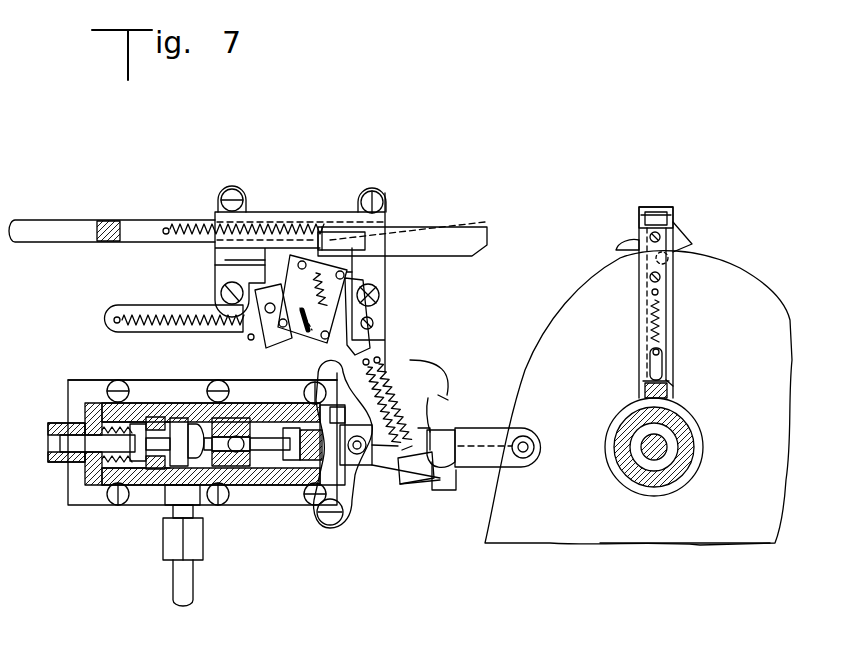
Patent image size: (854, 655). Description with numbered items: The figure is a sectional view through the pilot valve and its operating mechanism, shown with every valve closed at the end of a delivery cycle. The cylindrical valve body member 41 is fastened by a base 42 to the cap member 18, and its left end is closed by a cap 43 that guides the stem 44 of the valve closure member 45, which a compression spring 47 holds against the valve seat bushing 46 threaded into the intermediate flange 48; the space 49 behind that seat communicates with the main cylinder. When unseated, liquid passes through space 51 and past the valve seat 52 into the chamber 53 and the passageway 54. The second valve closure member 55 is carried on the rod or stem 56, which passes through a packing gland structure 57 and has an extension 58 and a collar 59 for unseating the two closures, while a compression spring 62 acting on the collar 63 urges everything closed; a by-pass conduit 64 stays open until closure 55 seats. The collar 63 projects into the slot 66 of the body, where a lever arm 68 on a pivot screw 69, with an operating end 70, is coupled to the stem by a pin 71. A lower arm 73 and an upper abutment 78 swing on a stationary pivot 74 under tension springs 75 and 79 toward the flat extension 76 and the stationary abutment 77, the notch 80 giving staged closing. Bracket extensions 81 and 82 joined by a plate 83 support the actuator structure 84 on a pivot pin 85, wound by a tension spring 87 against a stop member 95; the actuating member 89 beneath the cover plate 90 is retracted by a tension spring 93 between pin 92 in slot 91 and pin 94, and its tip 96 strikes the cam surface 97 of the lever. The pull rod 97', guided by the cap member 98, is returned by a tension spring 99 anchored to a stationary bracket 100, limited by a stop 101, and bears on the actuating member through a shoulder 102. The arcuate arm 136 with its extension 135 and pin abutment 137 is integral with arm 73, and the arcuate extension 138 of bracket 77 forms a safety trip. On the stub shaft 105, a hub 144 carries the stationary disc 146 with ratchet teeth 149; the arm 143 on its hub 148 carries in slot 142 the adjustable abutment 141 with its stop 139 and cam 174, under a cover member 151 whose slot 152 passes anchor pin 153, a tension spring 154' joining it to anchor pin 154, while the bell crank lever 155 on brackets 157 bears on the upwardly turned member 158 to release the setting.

The cap member 18 is at (71, 505).
The valve body member 41 is at (254, 478).
The base 42 is at (112, 486).
The cap 43 is at (88, 380).
The stem 44 is at (76, 437).
The valve closure member 45 is at (126, 470).
The valve seat bushing 46 is at (146, 470).
The compression spring 47 is at (100, 464).
The intermediate flange 48 is at (150, 424).
The space 49 is at (138, 403).
The space 51 is at (187, 417).
The valve seat 52 is at (212, 418).
The chamber 53 is at (240, 417).
The passageway 54 is at (233, 462).
The valve closure member 55 is at (190, 466).
The rod or stem 56 is at (247, 470).
The packing gland structure 57 is at (262, 485).
The extension 58 is at (160, 416).
The enlargement or collar 59 is at (295, 425).
The compression spring 62 is at (282, 486).
The collar 63 is at (308, 394).
The by-pass conduit 64 is at (196, 605).
The slot 66 is at (355, 503).
The lever arm 68 is at (352, 486).
The pivot screw 69 is at (340, 528).
The operating end 70 is at (320, 371).
The pin 71 is at (360, 424).
The arm 73 is at (402, 479).
The stationary pivot 74 is at (535, 447).
The tension spring 75 is at (385, 372).
The flat extension 76 is at (396, 382).
The stationary abutment 77 is at (470, 428).
The upper abutment 78 is at (440, 482).
The tension spring 79 is at (386, 363).
The notch 80 is at (418, 432).
The bracket extension 81 is at (225, 192).
The bracket extension 82 is at (388, 206).
The plate 83 is at (212, 306).
The actuator structure 84 is at (350, 271).
The pivot pin 85 is at (380, 296).
The tension spring 87 is at (150, 315).
The actuating member 89 is at (372, 250).
The cover plate 90 is at (290, 270).
The slot 91 is at (330, 332).
The pin 92 is at (312, 323).
The tension spring 93 is at (312, 281).
The pin 94 is at (312, 222).
The stop member 95 is at (250, 334).
The tip 96 is at (290, 346).
The cam surface 97 is at (351, 318).
The pull rod 97' is at (407, 217).
The cap member 98 is at (258, 211).
The tension spring 99 is at (289, 211).
The stationary bracket 100 is at (335, 226).
The stop 101 is at (213, 222).
The shoulder 102 is at (378, 229).
The stub shaft 105 is at (660, 448).
The downwardly directed extension 135 is at (447, 372).
The arcuate arm 136 is at (448, 399).
The pin abutment 137 is at (432, 398).
The arcuate extension 138 is at (432, 481).
The stop 139 is at (690, 241).
The adjustable abutment 141 is at (680, 216).
The slot 142 is at (668, 258).
The arm 143 is at (675, 318).
The hub 144 is at (675, 431).
The stationary disc 146 is at (741, 517).
The hub 148 is at (690, 476).
The ratchet teeth 149 is at (518, 313).
The cover member 151 is at (640, 281).
The slot 152 is at (651, 363).
The anchor pin 153 is at (662, 352).
The anchor pin 154 is at (690, 289).
The tension spring 154' is at (622, 321).
The bell crank lever 155 is at (641, 384).
The brackets 157 is at (668, 392).
The upwardly turned member 158 is at (673, 379).
The cam 174 is at (624, 241).